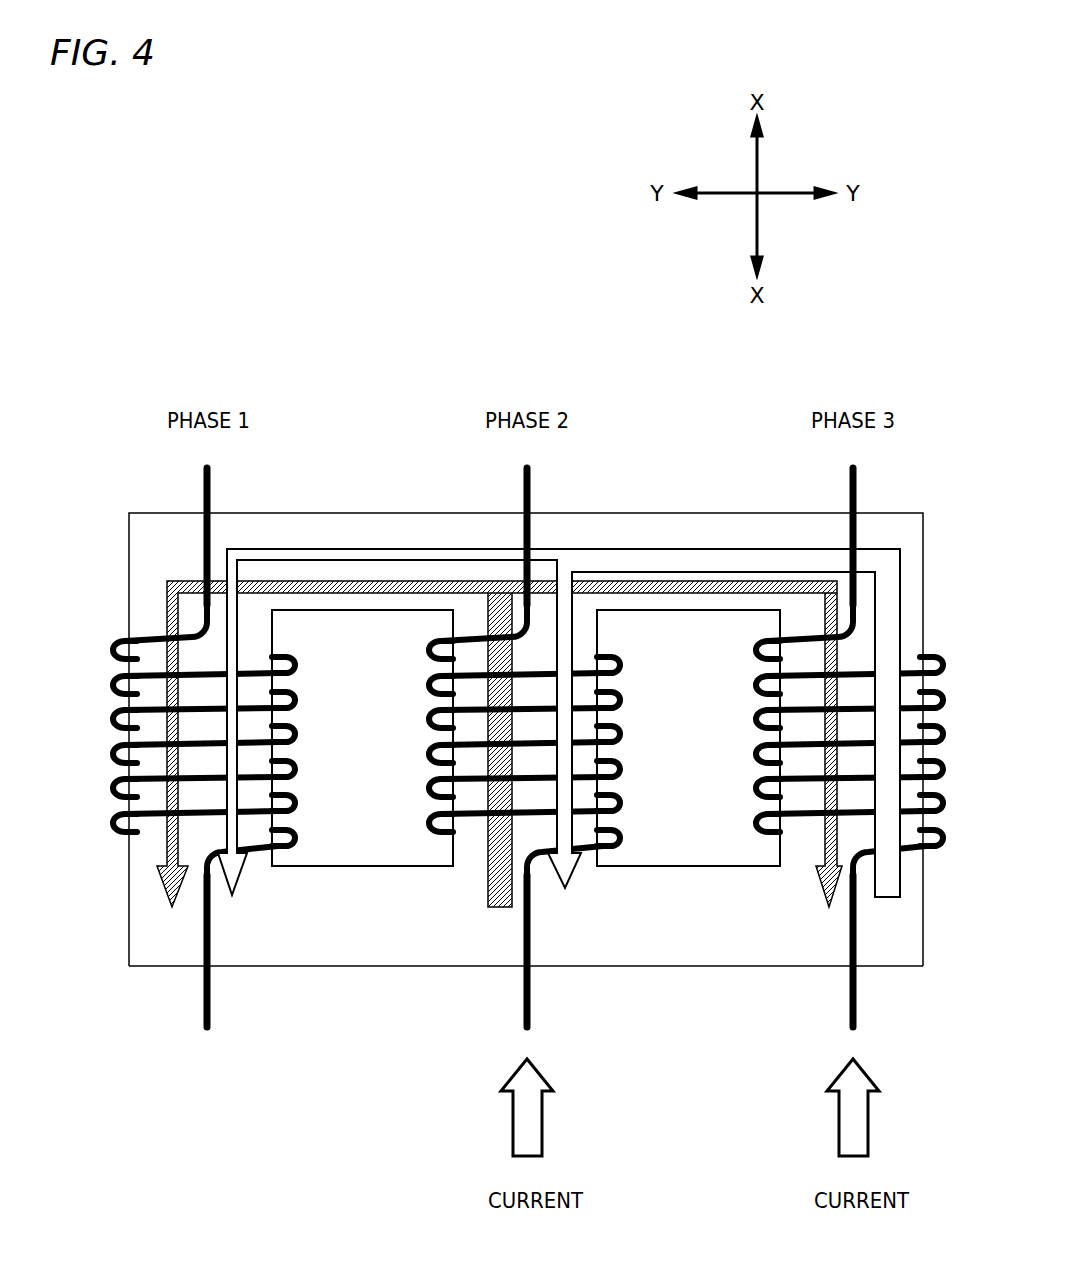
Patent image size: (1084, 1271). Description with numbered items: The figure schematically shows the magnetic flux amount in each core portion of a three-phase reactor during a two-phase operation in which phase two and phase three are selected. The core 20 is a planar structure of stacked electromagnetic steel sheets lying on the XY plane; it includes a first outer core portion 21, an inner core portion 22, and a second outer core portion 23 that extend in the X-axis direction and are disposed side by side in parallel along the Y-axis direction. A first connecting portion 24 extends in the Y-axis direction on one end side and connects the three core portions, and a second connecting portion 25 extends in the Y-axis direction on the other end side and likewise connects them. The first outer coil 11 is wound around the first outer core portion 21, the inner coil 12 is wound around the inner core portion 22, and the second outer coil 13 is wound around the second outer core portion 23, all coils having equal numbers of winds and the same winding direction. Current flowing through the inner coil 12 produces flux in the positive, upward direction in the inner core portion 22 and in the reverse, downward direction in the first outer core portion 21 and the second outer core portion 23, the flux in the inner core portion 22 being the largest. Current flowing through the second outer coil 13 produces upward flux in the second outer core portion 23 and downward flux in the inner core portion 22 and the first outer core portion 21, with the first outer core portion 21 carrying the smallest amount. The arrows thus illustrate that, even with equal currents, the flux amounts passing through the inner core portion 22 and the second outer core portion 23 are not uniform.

The first outer coil 11 is at (167, 637).
The inner coil 12 is at (440, 705).
The second outer coil 13 is at (765, 705).
The core 20 is at (283, 510).
The first outer core portion 21 is at (162, 851).
The inner core portion 22 is at (487, 848).
The second outer core portion 23 is at (815, 850).
The first connecting portion 24 is at (714, 548).
The second connecting portion 25 is at (338, 940).